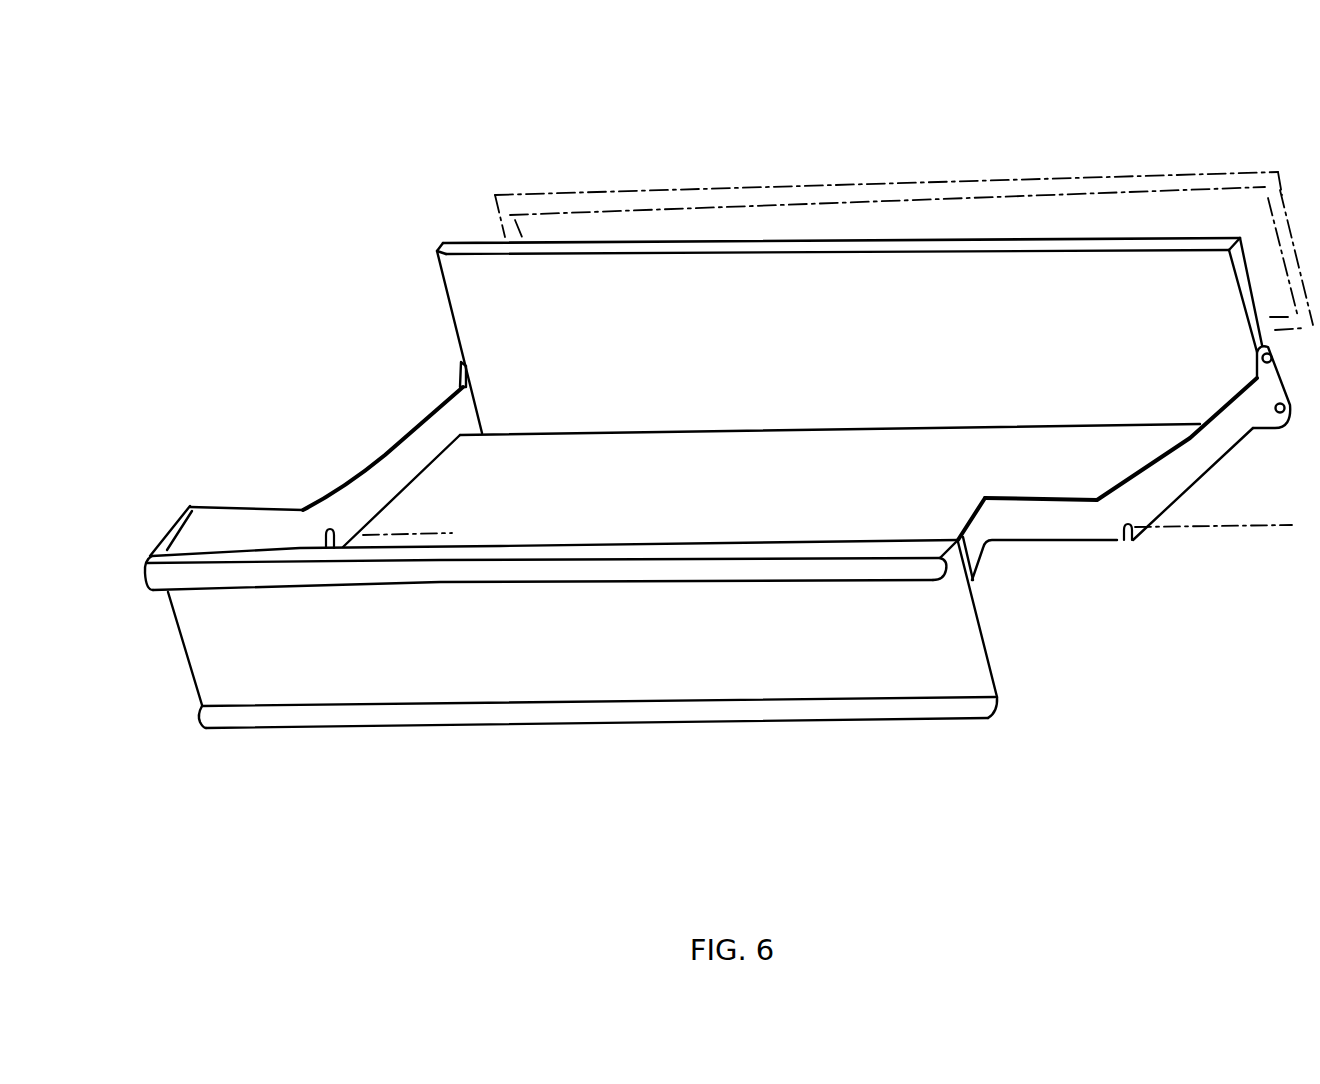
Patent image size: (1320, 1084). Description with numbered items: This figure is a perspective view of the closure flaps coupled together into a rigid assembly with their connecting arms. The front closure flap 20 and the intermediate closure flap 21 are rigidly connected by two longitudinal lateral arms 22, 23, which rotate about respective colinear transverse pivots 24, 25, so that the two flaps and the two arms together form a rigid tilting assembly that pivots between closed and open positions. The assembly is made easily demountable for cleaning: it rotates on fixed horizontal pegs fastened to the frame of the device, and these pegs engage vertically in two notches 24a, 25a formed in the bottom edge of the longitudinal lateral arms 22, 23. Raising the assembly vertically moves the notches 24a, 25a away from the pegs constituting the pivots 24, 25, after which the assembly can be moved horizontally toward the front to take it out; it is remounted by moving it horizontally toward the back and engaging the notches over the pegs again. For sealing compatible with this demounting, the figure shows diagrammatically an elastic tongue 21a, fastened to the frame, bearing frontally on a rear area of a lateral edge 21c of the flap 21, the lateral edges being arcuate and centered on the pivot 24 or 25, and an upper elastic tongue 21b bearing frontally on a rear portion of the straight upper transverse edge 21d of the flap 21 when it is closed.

The front closure flap 20 is at (750, 672).
The intermediate closure flap 21 is at (835, 280).
The elastic tongue 21a is at (1290, 207).
The upper elastic tongue 21b is at (1025, 188).
The lateral edge 21c is at (1242, 276).
The upper transverse edge 21d is at (925, 245).
The longitudinal lateral arm 22 is at (412, 448).
The longitudinal lateral arm 23 is at (1197, 463).
The transverse pivot 24 is at (440, 533).
The notch 24a is at (337, 530).
The transverse pivot 25 is at (1260, 525).
The notch 25a is at (1133, 540).